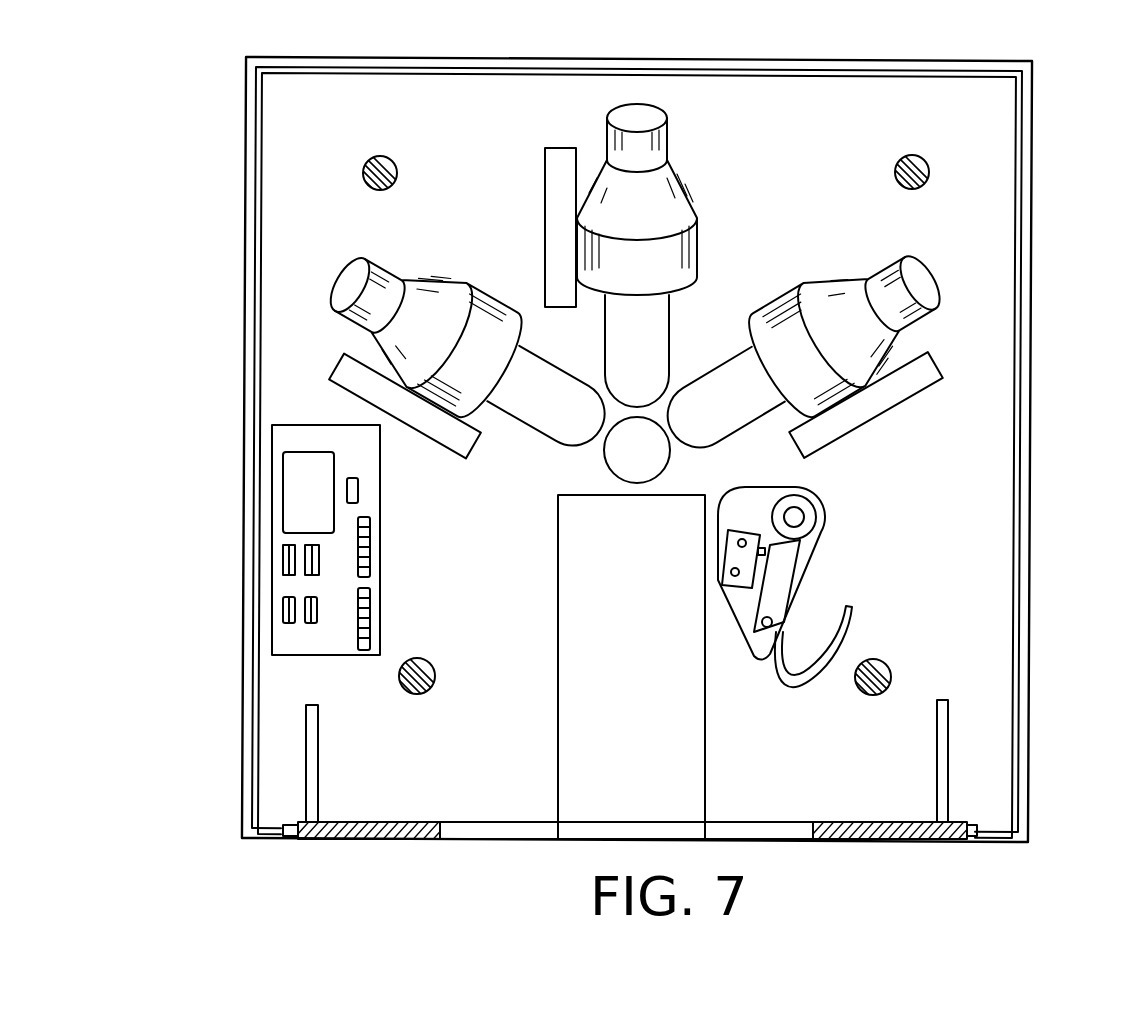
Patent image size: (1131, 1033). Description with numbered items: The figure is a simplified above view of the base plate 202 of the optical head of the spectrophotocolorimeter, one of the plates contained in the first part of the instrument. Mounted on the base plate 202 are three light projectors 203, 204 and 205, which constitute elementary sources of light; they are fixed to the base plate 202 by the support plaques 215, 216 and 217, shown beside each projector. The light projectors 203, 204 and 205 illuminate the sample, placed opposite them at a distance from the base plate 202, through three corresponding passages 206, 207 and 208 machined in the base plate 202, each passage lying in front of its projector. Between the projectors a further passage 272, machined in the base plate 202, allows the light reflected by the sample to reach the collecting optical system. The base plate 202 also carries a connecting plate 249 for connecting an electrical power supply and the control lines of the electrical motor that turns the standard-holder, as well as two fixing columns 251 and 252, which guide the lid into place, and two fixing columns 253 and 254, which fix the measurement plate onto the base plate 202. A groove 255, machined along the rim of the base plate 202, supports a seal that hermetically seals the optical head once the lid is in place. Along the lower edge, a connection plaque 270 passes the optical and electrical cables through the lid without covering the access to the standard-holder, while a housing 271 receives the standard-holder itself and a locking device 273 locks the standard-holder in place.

The base plate 202 is at (246, 131).
The light projector 203 is at (345, 276).
The light projector 204 is at (641, 112).
The light projector 205 is at (928, 292).
The passage 206 is at (540, 412).
The passage 207 is at (618, 344).
The passage 208 is at (736, 383).
The support plaque 215 is at (343, 360).
The support plaque 216 is at (548, 190).
The support plaque 217 is at (907, 368).
The connecting plate 249 is at (283, 487).
The fixing column 251 is at (364, 175).
The fixing column 252 is at (928, 174).
The fixing column 253 is at (420, 692).
The fixing column 254 is at (885, 672).
The groove 255 is at (1022, 480).
The connection plaque 270 is at (365, 840).
The housing 271 is at (558, 738).
The passage 272 is at (655, 455).
The locking device 273 is at (795, 580).